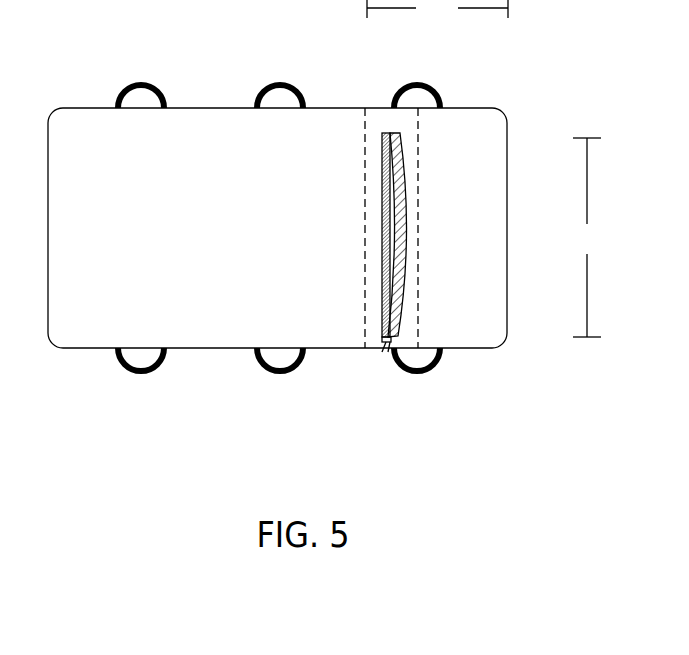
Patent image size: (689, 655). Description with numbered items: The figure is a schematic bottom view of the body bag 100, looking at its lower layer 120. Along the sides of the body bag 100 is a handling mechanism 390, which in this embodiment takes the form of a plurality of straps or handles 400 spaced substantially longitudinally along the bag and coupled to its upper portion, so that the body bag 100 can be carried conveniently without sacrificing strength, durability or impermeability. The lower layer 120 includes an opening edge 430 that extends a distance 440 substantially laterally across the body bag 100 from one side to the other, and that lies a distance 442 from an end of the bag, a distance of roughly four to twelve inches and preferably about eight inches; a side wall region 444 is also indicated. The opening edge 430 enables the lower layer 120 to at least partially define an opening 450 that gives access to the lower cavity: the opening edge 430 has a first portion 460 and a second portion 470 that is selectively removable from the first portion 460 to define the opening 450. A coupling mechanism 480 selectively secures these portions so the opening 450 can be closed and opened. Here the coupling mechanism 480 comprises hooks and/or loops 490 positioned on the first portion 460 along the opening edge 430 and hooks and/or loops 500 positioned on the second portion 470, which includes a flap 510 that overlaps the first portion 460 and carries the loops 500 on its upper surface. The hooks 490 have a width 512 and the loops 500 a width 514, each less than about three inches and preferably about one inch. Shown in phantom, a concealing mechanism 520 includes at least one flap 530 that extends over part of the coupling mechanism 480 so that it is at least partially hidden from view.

The body bag 100 is at (331, 246).
The lower layer 120 is at (486, 135).
The handling mechanism 390 is at (148, 50).
The handles 400 is at (165, 86).
The opening edge 430 is at (378, 170).
The distance 440 is at (587, 237).
The distance 442 is at (437, 10).
The side wall 444 is at (507, 268).
The opening 450 is at (400, 278).
The first portion 460 is at (348, 265).
The second portion 470 is at (434, 222).
The coupling mechanism 480 is at (384, 128).
The hooks and/or loops 490 is at (378, 224).
The hooks and/or loops 500 is at (406, 207).
The flap 510 is at (415, 130).
The width 512 is at (385, 342).
The width 514 is at (393, 342).
The concealing mechanism 520 is at (380, 355).
The flap 530 is at (410, 329).